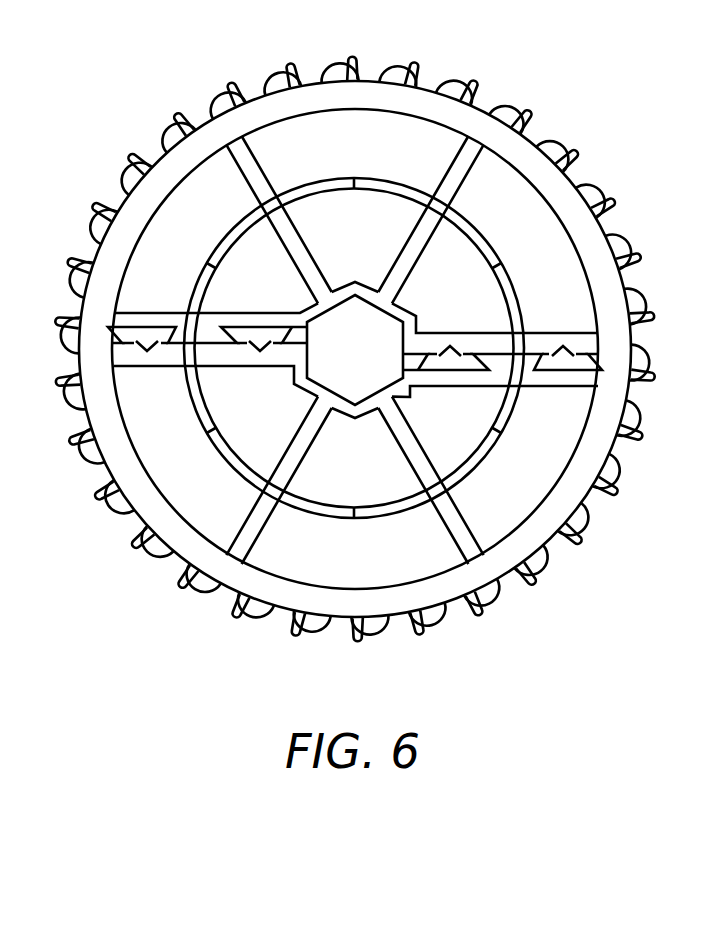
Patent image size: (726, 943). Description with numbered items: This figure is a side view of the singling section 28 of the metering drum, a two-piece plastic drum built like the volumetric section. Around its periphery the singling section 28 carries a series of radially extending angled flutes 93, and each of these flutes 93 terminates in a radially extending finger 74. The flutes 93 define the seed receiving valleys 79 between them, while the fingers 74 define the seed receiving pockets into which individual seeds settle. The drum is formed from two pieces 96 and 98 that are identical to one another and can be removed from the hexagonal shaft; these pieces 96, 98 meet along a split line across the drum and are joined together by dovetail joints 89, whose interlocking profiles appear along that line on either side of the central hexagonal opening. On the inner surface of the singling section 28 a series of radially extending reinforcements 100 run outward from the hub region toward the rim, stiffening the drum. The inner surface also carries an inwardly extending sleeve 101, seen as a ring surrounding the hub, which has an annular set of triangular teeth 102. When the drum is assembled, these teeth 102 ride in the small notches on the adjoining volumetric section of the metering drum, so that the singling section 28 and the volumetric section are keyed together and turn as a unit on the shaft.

The singling section 28 is at (567, 129).
The seed receiving valleys 79 is at (491, 113).
The radially extending fingers 74 is at (117, 500).
The radially extending angled flutes 93 is at (600, 500).
The piece 96 is at (367, 156).
The piece 98 is at (364, 569).
The radially extending reinforcements 100 is at (410, 244).
The inwardly extending sleeve 101 is at (200, 422).
The triangular teeth 102 is at (210, 253).
The dovetail joints 89 is at (243, 309).